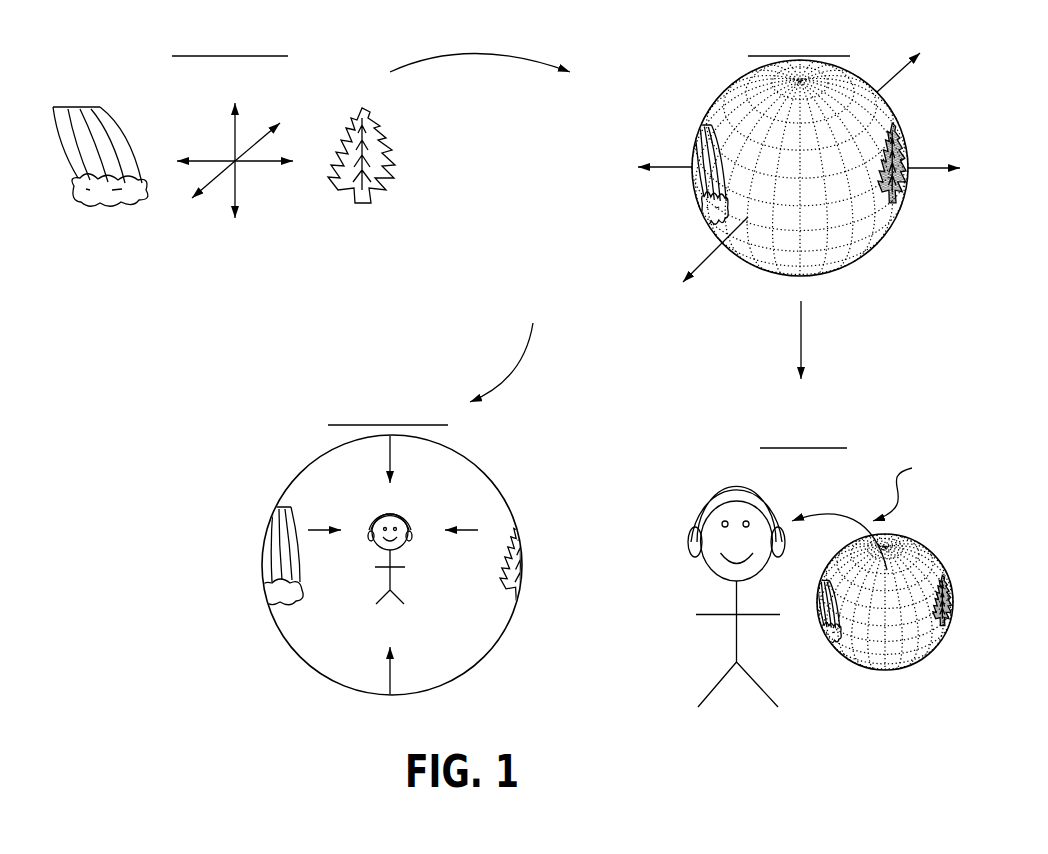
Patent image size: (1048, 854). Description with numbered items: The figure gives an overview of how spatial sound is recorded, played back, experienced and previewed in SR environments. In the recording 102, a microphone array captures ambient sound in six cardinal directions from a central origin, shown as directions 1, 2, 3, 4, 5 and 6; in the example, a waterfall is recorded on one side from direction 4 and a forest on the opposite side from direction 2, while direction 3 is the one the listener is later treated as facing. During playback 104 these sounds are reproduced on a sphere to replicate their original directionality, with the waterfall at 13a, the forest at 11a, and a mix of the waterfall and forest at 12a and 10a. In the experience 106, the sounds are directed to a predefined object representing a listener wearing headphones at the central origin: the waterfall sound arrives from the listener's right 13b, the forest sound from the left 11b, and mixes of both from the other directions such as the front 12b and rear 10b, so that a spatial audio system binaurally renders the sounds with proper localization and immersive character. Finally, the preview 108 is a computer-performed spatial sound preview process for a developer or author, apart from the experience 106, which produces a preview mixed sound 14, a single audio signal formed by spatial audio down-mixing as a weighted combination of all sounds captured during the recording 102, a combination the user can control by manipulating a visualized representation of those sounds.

The recording 102 is at (213, 27).
The playback 104 is at (783, 27).
The experience 106 is at (405, 398).
The preview 108 is at (789, 420).
The microphone direction 1 is at (295, 131).
The microphone direction 2 is at (309, 175).
The microphone direction 3 is at (186, 215).
The microphone direction 4 is at (166, 168).
The microphone direction 5 is at (230, 88).
The microphone direction 6 is at (230, 250).
The playback direction 10a is at (925, 48).
The playback direction 11a is at (970, 180).
The playback direction 12a is at (646, 307).
The playback direction 13a is at (595, 176).
The rear direction 10b is at (440, 480).
The left direction 11b is at (443, 563).
The front direction 12b is at (442, 646).
The right direction 13b is at (313, 563).
The preview mixed sound 14 is at (823, 503).